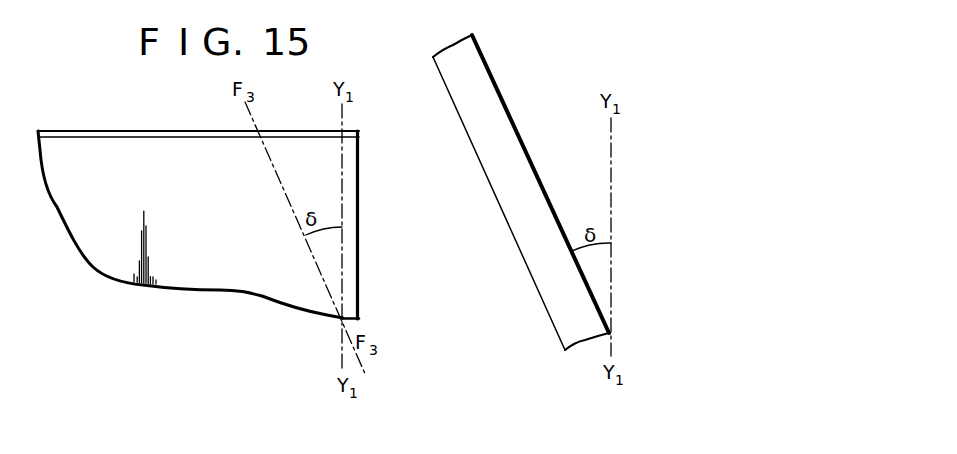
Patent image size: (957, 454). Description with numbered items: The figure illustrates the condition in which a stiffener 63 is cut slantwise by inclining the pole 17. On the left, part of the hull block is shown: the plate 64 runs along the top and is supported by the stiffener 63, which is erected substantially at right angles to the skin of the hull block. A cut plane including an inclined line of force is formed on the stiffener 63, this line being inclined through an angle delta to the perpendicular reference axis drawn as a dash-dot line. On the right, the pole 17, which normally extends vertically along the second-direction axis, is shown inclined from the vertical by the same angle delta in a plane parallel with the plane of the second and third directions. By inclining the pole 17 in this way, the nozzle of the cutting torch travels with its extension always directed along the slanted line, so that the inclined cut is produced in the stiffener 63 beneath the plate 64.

The plate 64 is at (108, 136).
The stiffener 63 is at (82, 251).
The pole 17 is at (499, 104).